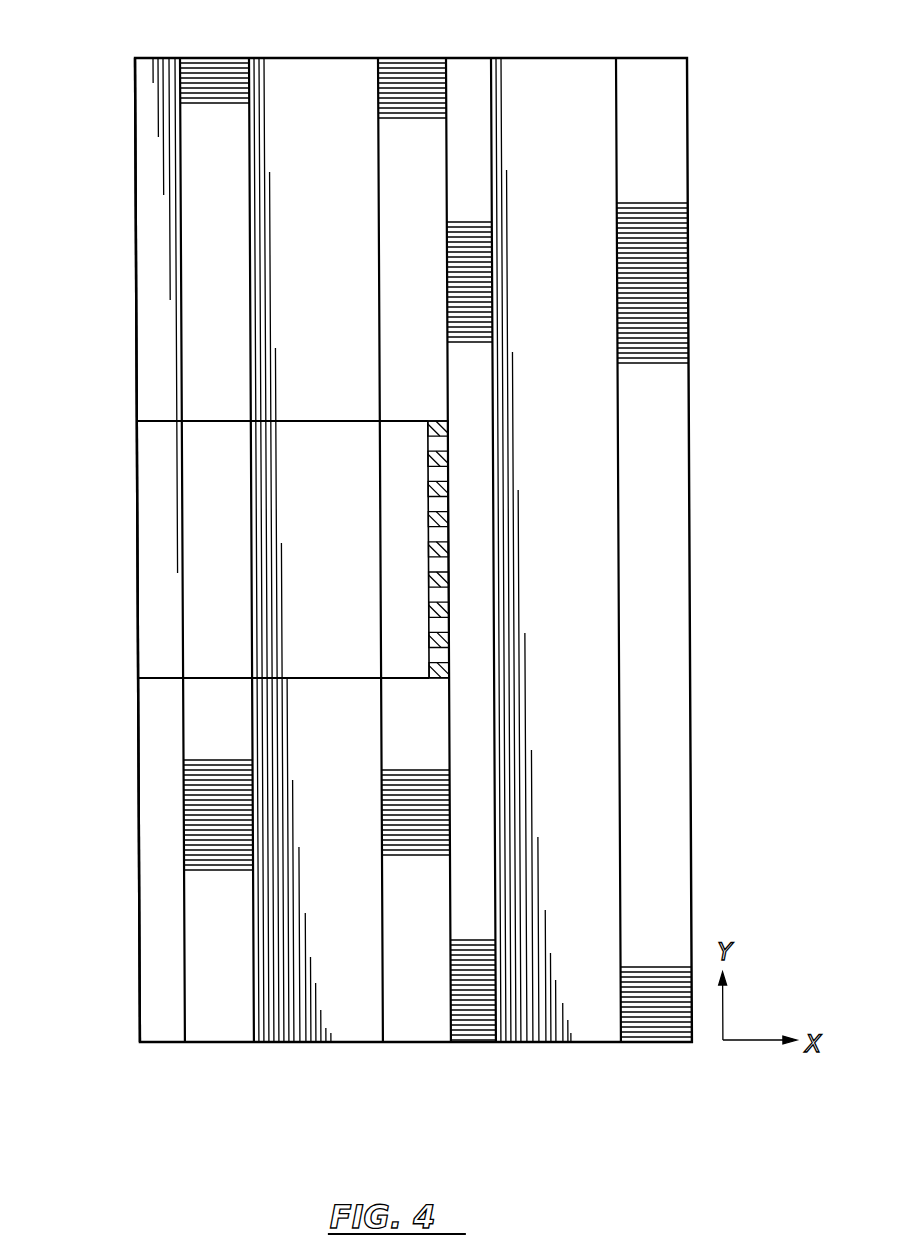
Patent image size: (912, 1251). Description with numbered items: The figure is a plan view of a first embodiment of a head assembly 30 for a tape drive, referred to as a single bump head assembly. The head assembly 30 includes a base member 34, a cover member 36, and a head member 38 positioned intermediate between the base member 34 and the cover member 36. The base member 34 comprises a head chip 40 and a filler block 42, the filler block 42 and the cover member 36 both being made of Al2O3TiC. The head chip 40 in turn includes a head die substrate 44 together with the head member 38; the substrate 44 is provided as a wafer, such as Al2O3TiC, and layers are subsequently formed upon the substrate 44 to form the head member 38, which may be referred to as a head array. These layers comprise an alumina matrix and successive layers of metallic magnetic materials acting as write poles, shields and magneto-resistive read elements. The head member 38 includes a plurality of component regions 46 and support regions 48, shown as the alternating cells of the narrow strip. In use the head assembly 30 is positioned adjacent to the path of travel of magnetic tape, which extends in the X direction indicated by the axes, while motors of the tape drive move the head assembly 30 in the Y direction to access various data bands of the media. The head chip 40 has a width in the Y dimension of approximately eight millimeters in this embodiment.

The head assembly 30 is at (74, 93).
The base member 34 is at (135, 1064).
The cover member 36 is at (447, 1064).
The head member 38 is at (407, 571).
The head chip 40 is at (123, 421).
The filler block 42 is at (124, 259).
The head die substrate 44 is at (317, 627).
The component regions 46 is at (447, 472).
The support regions 48 is at (447, 637).